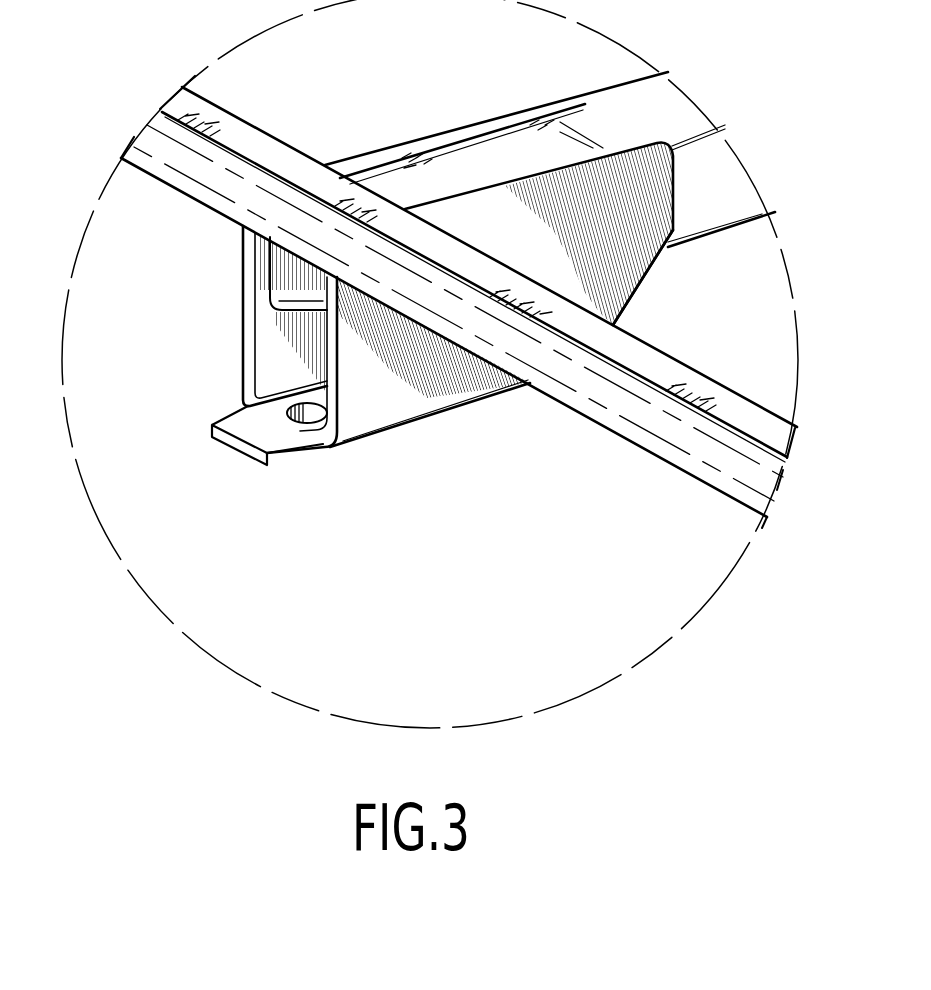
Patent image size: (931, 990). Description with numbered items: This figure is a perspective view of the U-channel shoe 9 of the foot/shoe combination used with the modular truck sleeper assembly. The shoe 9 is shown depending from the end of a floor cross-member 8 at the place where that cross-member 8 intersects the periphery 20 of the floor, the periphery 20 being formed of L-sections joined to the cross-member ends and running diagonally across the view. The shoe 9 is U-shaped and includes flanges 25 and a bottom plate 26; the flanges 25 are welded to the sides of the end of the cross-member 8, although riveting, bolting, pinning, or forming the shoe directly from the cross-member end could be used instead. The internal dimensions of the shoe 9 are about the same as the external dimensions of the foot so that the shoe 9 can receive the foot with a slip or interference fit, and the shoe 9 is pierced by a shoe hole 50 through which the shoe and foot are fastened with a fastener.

The cross-member 8 is at (643, 110).
The shoe 9 is at (441, 476).
The periphery 20 is at (645, 451).
The flanges 25 is at (482, 118).
The bottom plate 26 is at (218, 442).
The shoe hole 50 is at (294, 424).